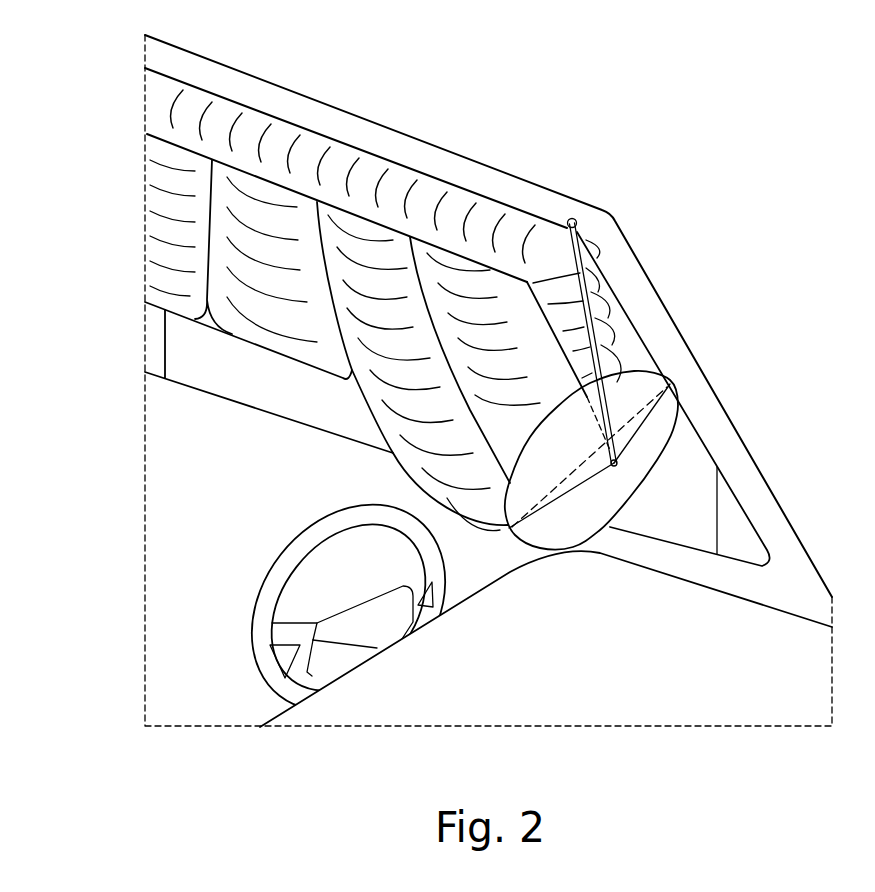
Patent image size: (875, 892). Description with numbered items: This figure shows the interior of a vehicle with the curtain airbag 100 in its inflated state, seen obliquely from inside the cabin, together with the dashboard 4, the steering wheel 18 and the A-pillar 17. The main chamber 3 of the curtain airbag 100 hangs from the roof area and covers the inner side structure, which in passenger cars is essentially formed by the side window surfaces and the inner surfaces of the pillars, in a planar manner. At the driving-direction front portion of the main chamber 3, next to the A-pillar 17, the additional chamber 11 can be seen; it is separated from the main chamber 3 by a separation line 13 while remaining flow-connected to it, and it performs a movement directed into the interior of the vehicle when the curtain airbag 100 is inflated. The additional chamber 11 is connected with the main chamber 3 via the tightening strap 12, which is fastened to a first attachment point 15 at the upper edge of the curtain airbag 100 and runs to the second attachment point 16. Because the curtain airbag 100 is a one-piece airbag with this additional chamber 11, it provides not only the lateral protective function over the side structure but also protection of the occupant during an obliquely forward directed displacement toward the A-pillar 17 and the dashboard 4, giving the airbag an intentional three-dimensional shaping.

The curtain airbag 100 is at (486, 211).
The main chamber 3 is at (282, 230).
The dashboard 4 is at (531, 666).
The additional chamber 11 is at (663, 438).
The tightening strap 12 is at (597, 307).
The separation line 13 is at (647, 423).
The first attachment point 15 is at (578, 221).
The second attachment point 16 is at (615, 466).
The A-pillar 17 is at (773, 518).
The steering wheel 18 is at (323, 653).